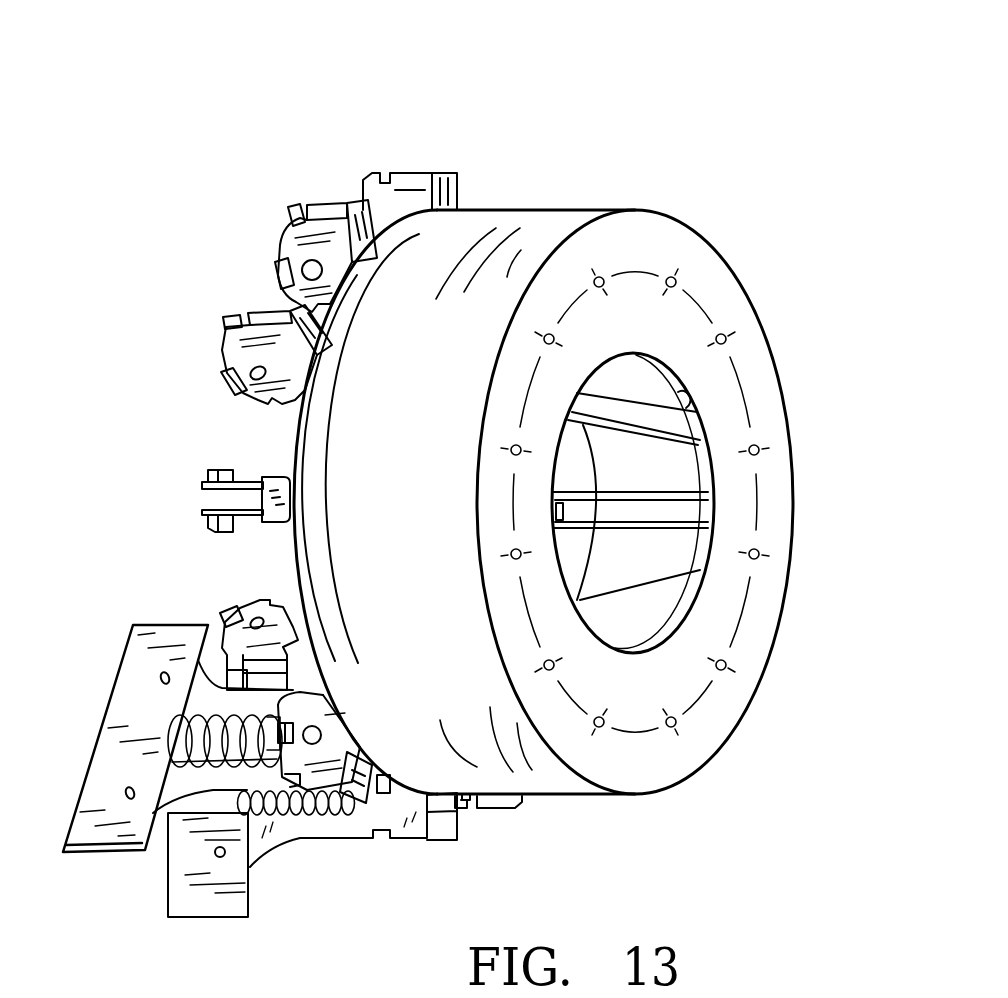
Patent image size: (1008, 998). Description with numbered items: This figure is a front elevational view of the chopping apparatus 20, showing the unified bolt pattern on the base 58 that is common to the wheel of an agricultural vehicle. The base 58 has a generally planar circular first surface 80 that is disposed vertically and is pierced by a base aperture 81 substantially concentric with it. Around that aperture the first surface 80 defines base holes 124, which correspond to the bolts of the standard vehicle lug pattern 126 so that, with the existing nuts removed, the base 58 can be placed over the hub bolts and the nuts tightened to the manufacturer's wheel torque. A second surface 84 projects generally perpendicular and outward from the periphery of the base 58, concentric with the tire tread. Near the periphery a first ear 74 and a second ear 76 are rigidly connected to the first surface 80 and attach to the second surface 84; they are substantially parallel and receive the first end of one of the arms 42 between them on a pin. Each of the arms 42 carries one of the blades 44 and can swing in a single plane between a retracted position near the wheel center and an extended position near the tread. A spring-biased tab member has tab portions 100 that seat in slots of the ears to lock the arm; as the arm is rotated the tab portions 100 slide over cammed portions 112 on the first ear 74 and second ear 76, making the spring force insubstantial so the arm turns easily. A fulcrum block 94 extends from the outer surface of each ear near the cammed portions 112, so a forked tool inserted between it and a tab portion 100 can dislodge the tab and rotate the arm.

The chopping apparatus 20 is at (500, 108).
The base 58 is at (521, 226).
The standard vehicle lug pattern 126 is at (724, 322).
The second ear 76 is at (237, 322).
The first ear 74 is at (232, 352).
The first surface 80 is at (693, 406).
The base holes 124 is at (762, 555).
The base aperture 81 is at (718, 509).
The second surface 84 is at (686, 553).
The tab portions 100 is at (297, 690).
The cammed portions 112 is at (337, 705).
The fulcrum block 94 is at (353, 750).
The arms 42 is at (268, 840).
The blades 44 is at (213, 918).